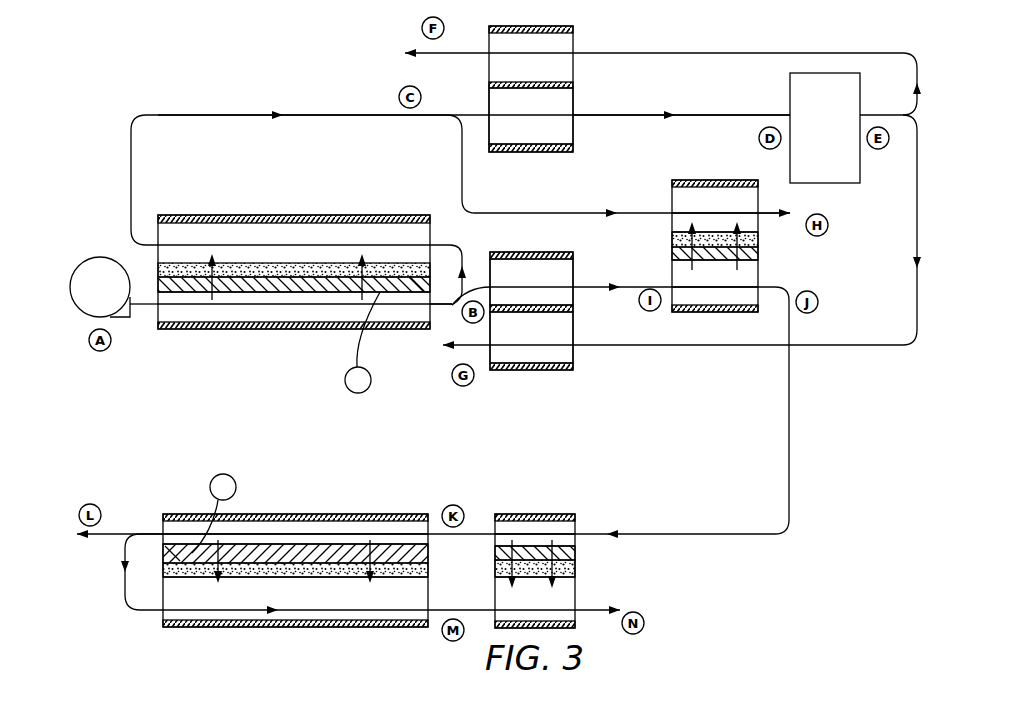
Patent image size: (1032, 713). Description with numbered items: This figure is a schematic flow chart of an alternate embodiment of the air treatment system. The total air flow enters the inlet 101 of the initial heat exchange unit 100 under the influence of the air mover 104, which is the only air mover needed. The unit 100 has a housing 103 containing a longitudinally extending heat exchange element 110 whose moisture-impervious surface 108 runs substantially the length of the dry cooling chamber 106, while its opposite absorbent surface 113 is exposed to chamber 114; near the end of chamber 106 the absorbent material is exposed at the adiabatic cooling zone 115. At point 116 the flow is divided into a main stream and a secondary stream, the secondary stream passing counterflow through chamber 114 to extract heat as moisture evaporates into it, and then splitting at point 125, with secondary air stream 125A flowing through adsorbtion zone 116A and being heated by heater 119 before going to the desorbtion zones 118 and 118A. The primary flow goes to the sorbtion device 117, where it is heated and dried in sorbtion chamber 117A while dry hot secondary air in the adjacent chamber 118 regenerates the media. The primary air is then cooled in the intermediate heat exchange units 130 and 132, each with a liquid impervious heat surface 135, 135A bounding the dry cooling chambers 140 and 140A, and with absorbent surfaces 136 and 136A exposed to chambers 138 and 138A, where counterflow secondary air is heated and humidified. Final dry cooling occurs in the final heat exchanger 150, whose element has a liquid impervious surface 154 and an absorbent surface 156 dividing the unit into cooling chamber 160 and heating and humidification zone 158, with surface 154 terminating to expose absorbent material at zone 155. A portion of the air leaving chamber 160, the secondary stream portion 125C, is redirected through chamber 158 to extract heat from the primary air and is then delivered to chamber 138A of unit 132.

The initial heat exchange unit 100 is at (305, 258).
The inlet 101 is at (150, 312).
The housing 103 is at (393, 214).
The air mover 104 is at (106, 257).
The dry cooling chamber 106 is at (327, 316).
The moisture-impervious surface 108 is at (257, 290).
The heat exchange element 110 is at (448, 244).
The absorbent surface 113 is at (278, 268).
The chamber 114 is at (237, 237).
The adiabatic cooling zone 115 is at (413, 295).
The point 116 is at (451, 306).
The sorbtion device 117 is at (564, 298).
The sorbtion chamber 117A is at (531, 282).
The adjacent chamber 118 is at (541, 340).
The desorbtion zone 118A is at (554, 78).
The adsorbtion zone 116A is at (545, 140).
The heater 119 is at (837, 163).
The point 125 is at (455, 102).
The secondary air stream 125A is at (622, 114).
The secondary stream portion 125C is at (137, 611).
The heat exchange unit 130 is at (758, 205).
The heat exchange unit 132 is at (570, 554).
The liquid impervious heat surface 135 is at (760, 252).
The liquid impervious heat surface 135A is at (576, 552).
The absorbent surface 136 is at (672, 238).
The absorbent surface 136A is at (576, 568).
The chamber 138 is at (725, 246).
The chamber 138A is at (555, 603).
The dry cooling chamber 140 is at (758, 275).
The dry cooling chamber 140A is at (530, 525).
The final heat exchanger 150 is at (299, 537).
The liquid impervious surface 154 is at (437, 548).
The zone 155 is at (176, 563).
The absorbent surface 156 is at (430, 570).
The heating and humidification zone 158 is at (328, 603).
The cooling chamber 160 is at (323, 527).